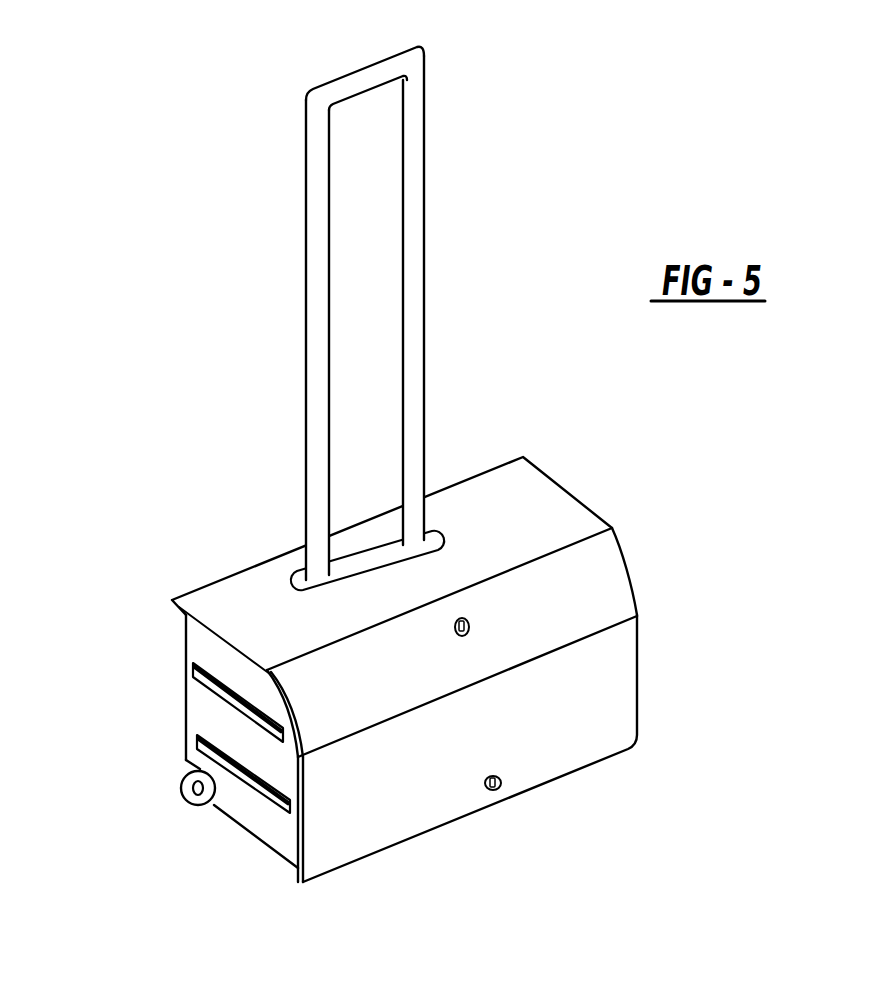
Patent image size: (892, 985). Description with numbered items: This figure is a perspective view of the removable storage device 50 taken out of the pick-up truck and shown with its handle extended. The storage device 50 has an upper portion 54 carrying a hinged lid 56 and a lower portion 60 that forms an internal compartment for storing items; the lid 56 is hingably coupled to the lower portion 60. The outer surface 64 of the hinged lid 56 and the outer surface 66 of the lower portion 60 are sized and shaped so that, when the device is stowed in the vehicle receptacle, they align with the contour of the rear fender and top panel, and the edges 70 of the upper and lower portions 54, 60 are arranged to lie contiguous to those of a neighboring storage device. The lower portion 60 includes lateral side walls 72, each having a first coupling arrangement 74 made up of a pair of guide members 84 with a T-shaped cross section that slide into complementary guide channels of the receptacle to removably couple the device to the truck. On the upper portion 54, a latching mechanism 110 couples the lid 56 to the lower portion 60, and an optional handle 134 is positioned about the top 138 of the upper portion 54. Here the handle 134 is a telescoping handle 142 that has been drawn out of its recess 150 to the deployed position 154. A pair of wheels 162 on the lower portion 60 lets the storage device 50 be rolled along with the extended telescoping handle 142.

The removable storage device 50 is at (430, 485).
The upper portion 54 is at (606, 604).
The hinged lid 56 is at (548, 515).
The lower portion 60 is at (612, 697).
The outer surface of the hinged lid 64 is at (593, 590).
The outer surface of the lower portion 66 is at (537, 748).
The edges 70 is at (176, 606).
The lateral side wall 72 is at (258, 815).
The first coupling arrangement 74 is at (277, 822).
The guide members 84 is at (210, 683).
The latching mechanism 110 is at (451, 644).
The handle 134 is at (396, 294).
The top 138 is at (492, 523).
The telescoping handle 142 is at (412, 240).
The recess 150 is at (371, 565).
The deployed position 154 is at (426, 76).
The wheels 162 is at (190, 807).